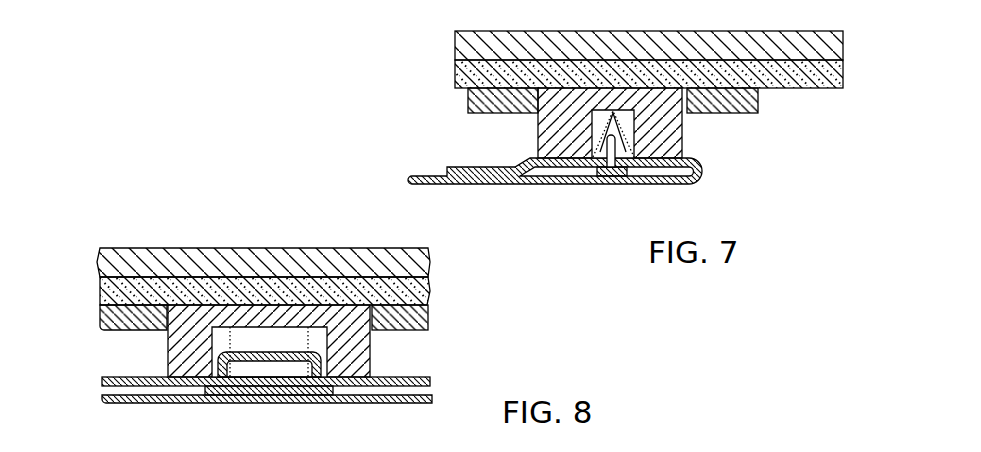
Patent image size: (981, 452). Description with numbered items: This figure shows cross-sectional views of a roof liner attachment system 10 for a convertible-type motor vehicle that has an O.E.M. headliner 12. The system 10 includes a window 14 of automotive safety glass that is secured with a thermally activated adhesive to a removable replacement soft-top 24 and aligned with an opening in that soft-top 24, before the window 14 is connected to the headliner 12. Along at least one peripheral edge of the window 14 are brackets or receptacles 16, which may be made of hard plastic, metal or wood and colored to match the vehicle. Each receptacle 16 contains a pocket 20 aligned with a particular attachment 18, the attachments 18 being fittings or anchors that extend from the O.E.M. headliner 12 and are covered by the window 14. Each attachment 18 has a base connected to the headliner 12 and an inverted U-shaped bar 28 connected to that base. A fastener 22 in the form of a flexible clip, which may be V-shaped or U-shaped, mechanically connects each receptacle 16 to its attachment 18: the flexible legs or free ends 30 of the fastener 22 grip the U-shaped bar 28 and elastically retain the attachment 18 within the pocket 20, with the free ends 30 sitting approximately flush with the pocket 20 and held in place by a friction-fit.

In FIG. 7, the roof liner attachment system 10 is at (397, 116).
In FIG. 8, the roof liner attachment system 10 is at (490, 287).
In FIG. 7, the O.E.M. headliner 12 is at (702, 170).
In FIG. 8, the O.E.M. headliner 12 is at (122, 378).
In FIG. 7, the window 14 is at (778, 90).
In FIG. 8, the window 14 is at (430, 283).
In FIG. 7, the receptacle 16 is at (683, 127).
In FIG. 8, the receptacle 16 is at (372, 349).
In FIG. 7, the attachment 18 is at (605, 172).
In FIG. 8, the attachment 18 is at (226, 398).
In FIG. 7, the pocket 20 is at (597, 139).
In FIG. 8, the pocket 20 is at (322, 346).
In FIG. 7, the fastener 22 is at (600, 130).
In FIG. 8, the fastener 22 is at (232, 333).
In FIG. 7, the soft-top 24 is at (733, 31).
In FIG. 8, the soft-top 24 is at (192, 248).
In FIG. 7, the inverted U-shaped bar 28 is at (337, 0).
In FIG. 7, the free ends 30 is at (623, 145).